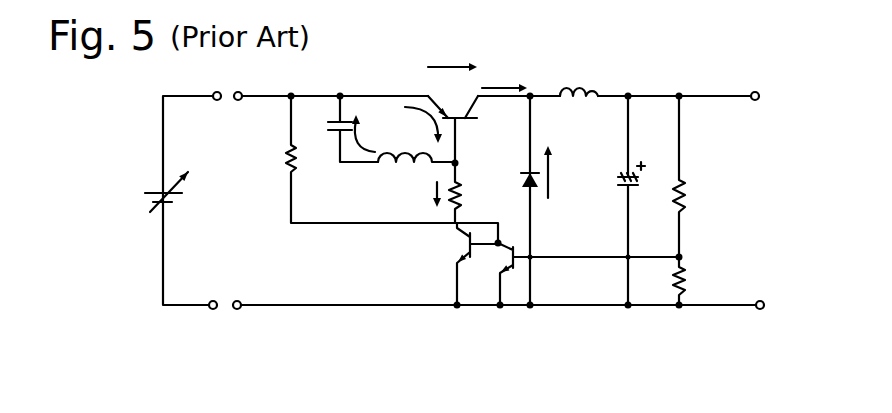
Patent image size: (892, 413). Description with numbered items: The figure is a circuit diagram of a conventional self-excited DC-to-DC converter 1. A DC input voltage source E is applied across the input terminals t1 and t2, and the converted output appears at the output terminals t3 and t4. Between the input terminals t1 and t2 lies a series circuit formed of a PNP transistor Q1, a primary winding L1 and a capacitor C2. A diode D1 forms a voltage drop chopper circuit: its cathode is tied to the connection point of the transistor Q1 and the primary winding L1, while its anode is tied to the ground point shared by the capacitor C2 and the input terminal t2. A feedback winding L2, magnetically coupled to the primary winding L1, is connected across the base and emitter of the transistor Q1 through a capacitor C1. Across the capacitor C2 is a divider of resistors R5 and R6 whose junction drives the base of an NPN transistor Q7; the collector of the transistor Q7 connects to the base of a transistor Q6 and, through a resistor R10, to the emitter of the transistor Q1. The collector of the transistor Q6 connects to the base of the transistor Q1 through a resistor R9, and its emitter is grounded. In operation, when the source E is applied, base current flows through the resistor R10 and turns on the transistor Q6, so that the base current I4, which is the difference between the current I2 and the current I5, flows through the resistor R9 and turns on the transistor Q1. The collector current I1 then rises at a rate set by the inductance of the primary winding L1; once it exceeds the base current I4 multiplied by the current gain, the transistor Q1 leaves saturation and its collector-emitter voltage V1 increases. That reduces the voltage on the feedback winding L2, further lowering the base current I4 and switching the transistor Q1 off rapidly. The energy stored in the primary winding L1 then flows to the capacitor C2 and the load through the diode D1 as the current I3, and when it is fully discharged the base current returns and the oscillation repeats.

The prior art DC-DC converter circuit 1 is at (298, 358).
The input terminal t1 is at (231, 78).
The input terminal t2 is at (232, 323).
The output terminal t3 is at (765, 79).
The output terminal t4 is at (768, 325).
The DC input voltage source E is at (149, 194).
The resistor R10 is at (363, 169).
The capacitor C1 is at (338, 129).
The feedback winding L2 is at (411, 183).
The current I5 is at (368, 125).
The current I2 is at (420, 131).
The PNP transistor Q1 is at (453, 116).
The collector-emitter voltage of the transistor Q1 V1 is at (451, 52).
The collector current I1 is at (504, 72).
The resistor R9 is at (478, 193).
The base current I4 is at (434, 186).
The NPN transistor Q6 is at (452, 264).
The NPN transistor Q7 is at (569, 274).
The diode D1 is at (510, 200).
The current I3 is at (564, 169).
The primary winding L1 is at (579, 110).
The capacitor C2 is at (610, 200).
The resistor R5 is at (702, 176).
The resistor R6 is at (700, 281).